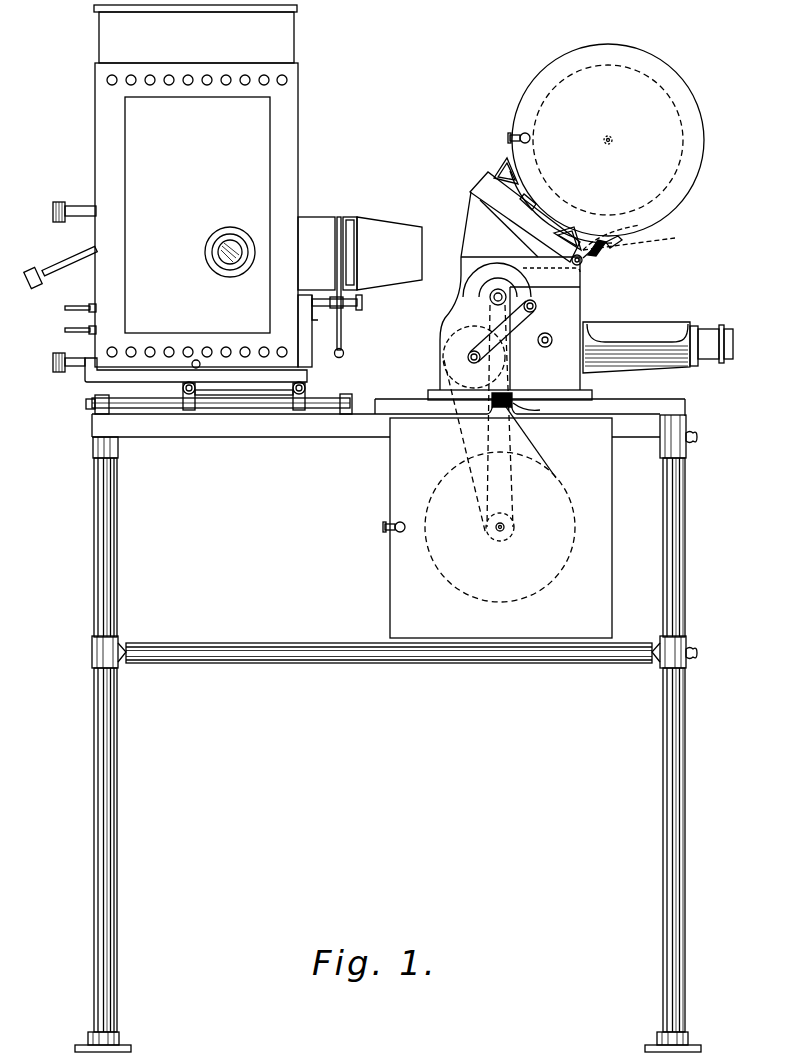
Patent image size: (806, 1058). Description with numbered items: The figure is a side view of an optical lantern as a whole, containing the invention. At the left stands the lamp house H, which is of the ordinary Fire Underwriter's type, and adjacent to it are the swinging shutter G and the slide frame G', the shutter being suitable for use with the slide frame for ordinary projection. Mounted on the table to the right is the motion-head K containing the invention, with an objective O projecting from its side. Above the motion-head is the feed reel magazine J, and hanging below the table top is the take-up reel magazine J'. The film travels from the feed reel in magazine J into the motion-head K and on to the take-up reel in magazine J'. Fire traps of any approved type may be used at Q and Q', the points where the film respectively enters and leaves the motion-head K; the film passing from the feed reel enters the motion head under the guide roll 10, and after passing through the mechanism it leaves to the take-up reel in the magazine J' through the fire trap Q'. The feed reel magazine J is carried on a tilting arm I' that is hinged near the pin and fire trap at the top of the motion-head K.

The lamp house H is at (299, 127).
The slide frame G' is at (360, 247).
The swinging shutter G is at (358, 287).
The feed reel magazine J is at (606, 142).
The tilting reel arm I' is at (578, 211).
The fire trap Q is at (616, 257).
The guide roll 10 is at (587, 266).
The motion-head K is at (453, 308).
The objective lens O is at (666, 336).
The fire trap Q' is at (538, 437).
The take-up reel magazine J' is at (476, 528).